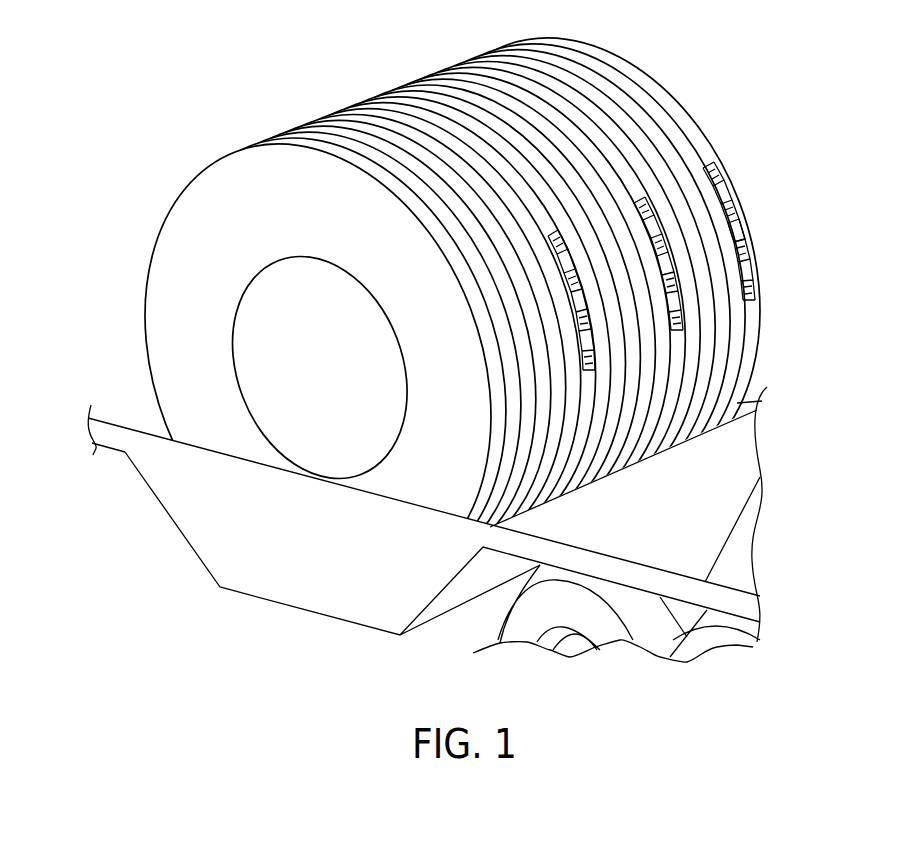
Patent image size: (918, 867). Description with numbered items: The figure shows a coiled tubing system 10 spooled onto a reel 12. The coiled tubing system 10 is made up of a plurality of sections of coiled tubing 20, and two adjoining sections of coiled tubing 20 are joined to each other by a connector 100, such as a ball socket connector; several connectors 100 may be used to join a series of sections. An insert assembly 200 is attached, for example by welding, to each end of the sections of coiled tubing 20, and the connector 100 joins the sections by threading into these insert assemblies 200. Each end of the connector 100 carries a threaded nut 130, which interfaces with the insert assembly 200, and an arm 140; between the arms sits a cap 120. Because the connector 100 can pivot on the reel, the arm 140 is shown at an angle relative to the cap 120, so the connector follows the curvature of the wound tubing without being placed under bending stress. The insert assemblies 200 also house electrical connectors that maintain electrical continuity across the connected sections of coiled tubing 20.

The coiled tubing system 10 is at (383, 63).
The reel 12 is at (190, 412).
The coiled tubing 20 is at (707, 152).
The connector 100 is at (733, 255).
The cap 120 is at (737, 227).
The threaded nut 130 is at (728, 190).
The arm 140 is at (733, 207).
The insert assembly 200 is at (727, 182).